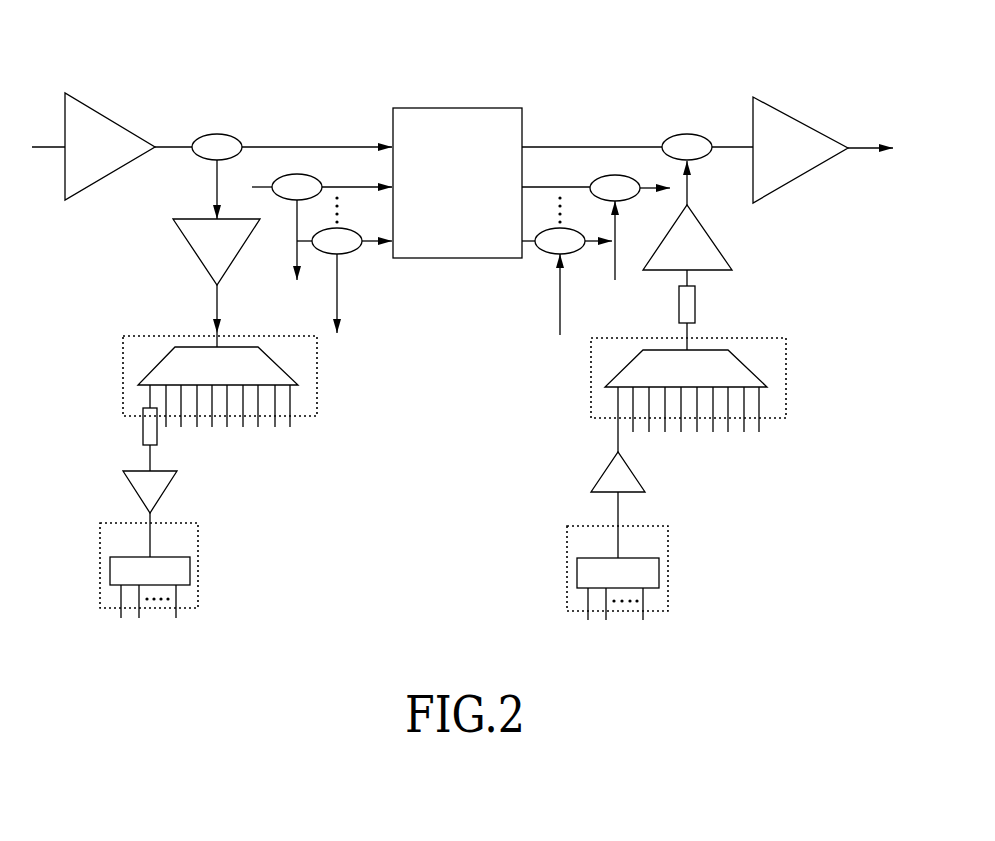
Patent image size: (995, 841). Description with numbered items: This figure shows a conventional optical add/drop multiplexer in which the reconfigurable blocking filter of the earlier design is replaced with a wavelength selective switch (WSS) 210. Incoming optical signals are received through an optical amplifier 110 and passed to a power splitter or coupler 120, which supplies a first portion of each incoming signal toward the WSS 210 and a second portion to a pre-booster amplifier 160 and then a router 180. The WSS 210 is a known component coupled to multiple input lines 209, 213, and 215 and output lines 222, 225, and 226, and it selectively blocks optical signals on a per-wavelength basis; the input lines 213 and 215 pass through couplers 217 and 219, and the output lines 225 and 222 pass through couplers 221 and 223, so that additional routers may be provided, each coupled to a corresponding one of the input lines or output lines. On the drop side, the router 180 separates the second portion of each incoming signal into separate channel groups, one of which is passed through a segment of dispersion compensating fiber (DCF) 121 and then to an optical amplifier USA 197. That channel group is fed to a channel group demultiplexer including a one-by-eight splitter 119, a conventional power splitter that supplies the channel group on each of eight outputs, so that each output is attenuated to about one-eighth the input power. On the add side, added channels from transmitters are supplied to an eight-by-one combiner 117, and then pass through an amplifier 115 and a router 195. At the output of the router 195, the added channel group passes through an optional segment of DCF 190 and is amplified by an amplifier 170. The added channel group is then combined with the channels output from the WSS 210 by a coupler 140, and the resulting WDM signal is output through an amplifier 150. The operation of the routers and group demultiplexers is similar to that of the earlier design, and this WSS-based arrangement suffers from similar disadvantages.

The optical amplifier 110 is at (100, 114).
The coupler 120 is at (195, 137).
The input line 209 is at (356, 147).
The input line 213 is at (255, 187).
The input coupler 217 is at (296, 174).
The input line 215 is at (304, 245).
The input coupler 219 is at (355, 253).
The wavelength selective switch 210 is at (467, 108).
The output line 226 is at (633, 147).
The output line 225 is at (532, 187).
The output coupler 223 is at (598, 177).
The output coupler 221 is at (540, 255).
The output line 222 is at (597, 253).
The coupler 140 is at (710, 137).
The amplifier 150 is at (788, 117).
The amplifier 170 is at (711, 240).
The DCF 190 is at (695, 322).
The router 195 is at (786, 383).
The amplifier 115 is at (633, 475).
The 8×1 combiner 117 is at (668, 567).
The pre-booster amplifier 160 is at (194, 250).
The router 180 is at (123, 360).
The DCF 121 is at (158, 438).
The optical amplifier USA 197 is at (137, 493).
The 1×8 splitter 119 is at (198, 563).